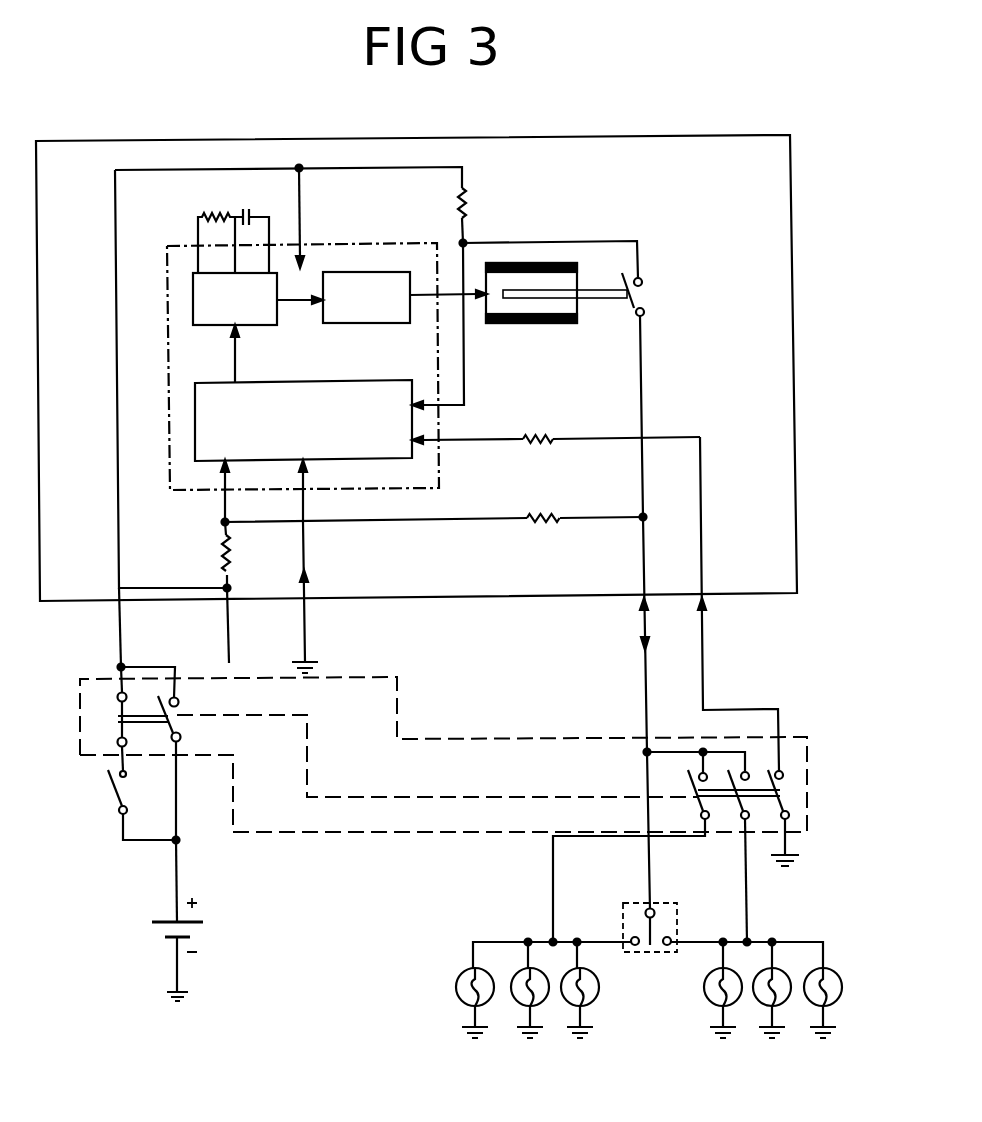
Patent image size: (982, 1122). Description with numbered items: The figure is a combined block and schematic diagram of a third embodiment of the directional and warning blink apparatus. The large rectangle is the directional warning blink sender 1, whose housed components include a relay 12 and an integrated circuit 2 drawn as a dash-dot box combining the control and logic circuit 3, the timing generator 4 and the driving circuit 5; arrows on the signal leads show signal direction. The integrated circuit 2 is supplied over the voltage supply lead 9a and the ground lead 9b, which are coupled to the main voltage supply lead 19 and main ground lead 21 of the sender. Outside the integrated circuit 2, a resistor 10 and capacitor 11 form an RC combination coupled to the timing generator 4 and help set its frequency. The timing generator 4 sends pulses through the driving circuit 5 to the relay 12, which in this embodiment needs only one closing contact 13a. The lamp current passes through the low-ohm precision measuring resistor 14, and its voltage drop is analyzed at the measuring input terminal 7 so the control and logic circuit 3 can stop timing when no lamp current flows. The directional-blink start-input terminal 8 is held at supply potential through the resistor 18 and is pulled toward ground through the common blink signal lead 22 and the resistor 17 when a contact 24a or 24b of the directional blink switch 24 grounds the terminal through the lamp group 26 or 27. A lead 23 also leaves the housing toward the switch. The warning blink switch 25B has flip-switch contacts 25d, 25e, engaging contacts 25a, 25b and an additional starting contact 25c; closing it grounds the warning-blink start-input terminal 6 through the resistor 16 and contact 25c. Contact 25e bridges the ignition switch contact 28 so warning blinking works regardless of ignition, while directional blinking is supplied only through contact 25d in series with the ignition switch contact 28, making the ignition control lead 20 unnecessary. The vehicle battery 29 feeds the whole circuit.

The directional warning blink sender 1 is at (728, 135).
The integrated circuit 2 is at (440, 488).
The control and logic circuit 3 is at (320, 380).
The timing generator 4 is at (208, 328).
The driving circuit 5 is at (378, 324).
The warning-blink start-input terminal 6 is at (410, 442).
The measuring input terminal 7 is at (411, 404).
The directional-blink start-input terminal 8 is at (218, 460).
The voltage supply lead 9a is at (300, 218).
The ground lead 9b is at (305, 512).
The resistor 10 is at (215, 211).
The capacitor 11 is at (246, 208).
The relay 12 is at (557, 323).
The relay contact 13a is at (623, 284).
The precision measuring resistor 14 is at (466, 190).
The resistor 16 is at (550, 436).
The resistor 17 is at (550, 516).
The resistor 18 is at (228, 541).
The main voltage supply lead 19 is at (121, 617).
The ignition control lead 20 is at (228, 612).
The main ground lead 21 is at (306, 612).
The blink signal lead 22 is at (643, 670).
The terminal 23 is at (703, 677).
The directional blink switch 24 is at (644, 966).
The contact of directional blink switch 24a is at (635, 946).
The contact of directional blink switch 24b is at (668, 946).
The warning blink switch 25B is at (710, 823).
The warning blink switch contact 25a is at (708, 820).
The warning blink switch contact 25b is at (747, 819).
The starting contact 25c is at (788, 820).
The flip-switch contact 25d is at (117, 696).
The flip-switch contact 25e is at (179, 703).
The blink signal lamps 26 is at (567, 1006).
The blink signal lamps 27 is at (818, 1006).
The ignition switch contact 28 is at (115, 786).
The vehicle battery 29 is at (190, 921).